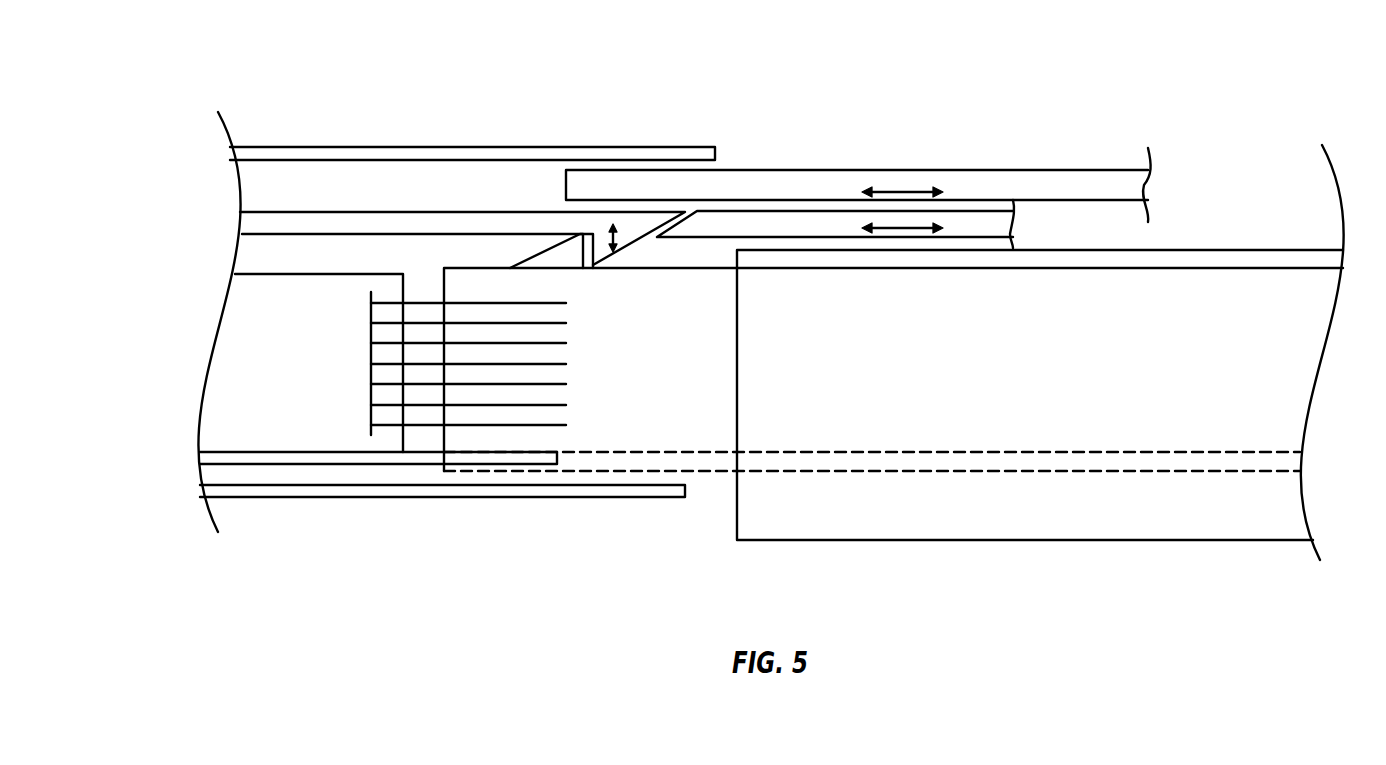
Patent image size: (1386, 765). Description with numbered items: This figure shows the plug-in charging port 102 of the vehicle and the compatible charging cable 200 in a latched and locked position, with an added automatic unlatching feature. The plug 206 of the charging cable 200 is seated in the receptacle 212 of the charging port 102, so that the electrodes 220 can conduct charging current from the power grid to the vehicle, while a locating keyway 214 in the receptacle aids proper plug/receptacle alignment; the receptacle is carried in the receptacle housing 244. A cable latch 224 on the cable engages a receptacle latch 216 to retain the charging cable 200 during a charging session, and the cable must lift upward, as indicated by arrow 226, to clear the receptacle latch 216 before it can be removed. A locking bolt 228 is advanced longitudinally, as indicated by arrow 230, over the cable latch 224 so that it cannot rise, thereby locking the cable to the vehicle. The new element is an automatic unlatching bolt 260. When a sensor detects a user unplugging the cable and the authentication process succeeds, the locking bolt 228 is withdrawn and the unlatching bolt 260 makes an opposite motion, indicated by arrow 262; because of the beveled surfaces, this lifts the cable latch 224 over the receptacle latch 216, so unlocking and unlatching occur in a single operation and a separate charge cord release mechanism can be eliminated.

The charging cable 200 is at (381, 98).
The plug-in charging port 102 is at (1272, 160).
The plug 206 is at (212, 410).
The receptacle 212 is at (697, 367).
The keyway 214 is at (720, 462).
The receptacle latch 216 is at (537, 262).
The electrodes 220 is at (368, 348).
The cable latch 224 is at (360, 212).
The arrow 226 is at (622, 243).
The locking bolt 228 is at (960, 169).
The arrow 230 is at (902, 191).
The receptacle housing 244 is at (875, 530).
The unlatching bolt 260 is at (980, 227).
The arrow 262 is at (905, 230).